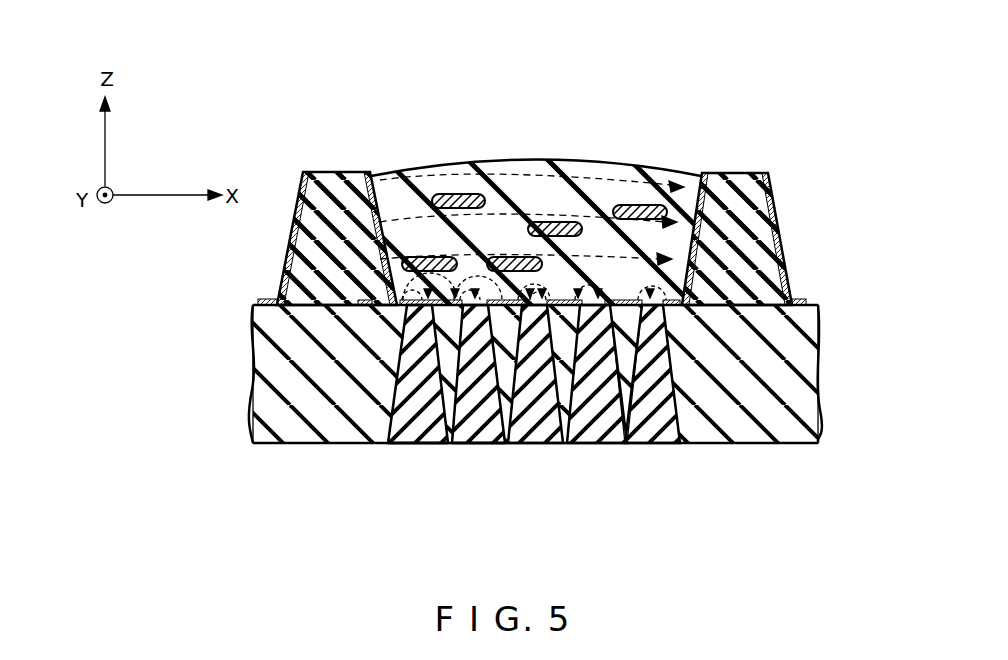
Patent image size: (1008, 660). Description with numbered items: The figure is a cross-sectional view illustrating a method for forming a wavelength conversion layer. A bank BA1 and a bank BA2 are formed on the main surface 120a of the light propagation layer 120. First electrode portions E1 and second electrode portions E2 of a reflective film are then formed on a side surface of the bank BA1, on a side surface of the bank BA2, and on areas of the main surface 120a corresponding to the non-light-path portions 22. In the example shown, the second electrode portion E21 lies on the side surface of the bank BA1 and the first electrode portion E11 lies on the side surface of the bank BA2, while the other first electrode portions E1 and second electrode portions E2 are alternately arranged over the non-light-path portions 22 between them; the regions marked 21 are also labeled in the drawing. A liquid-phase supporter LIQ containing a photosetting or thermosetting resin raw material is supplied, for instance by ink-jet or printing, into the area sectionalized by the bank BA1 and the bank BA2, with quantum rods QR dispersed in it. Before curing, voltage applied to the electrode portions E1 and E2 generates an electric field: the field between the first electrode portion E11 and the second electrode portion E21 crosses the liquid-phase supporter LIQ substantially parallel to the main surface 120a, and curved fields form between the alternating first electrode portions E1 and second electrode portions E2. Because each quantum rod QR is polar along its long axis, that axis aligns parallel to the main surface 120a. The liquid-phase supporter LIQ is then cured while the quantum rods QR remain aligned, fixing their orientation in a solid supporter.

The light propagation layer 120 is at (232, 380).
The main surface 120a is at (310, 294).
The non-light-path portions 22 is at (330, 382).
The electrode portion 21 is at (410, 330).
The first electrode portions E1 is at (432, 380).
The second electrode portions E2 is at (485, 380).
The first electrode portion E11 is at (695, 308).
The second electrode portion E21 is at (367, 308).
The bank BA1 is at (333, 170).
The bank BA2 is at (729, 183).
The liquid-phase supporter LIQ is at (418, 172).
The quantum rod QR is at (637, 205).